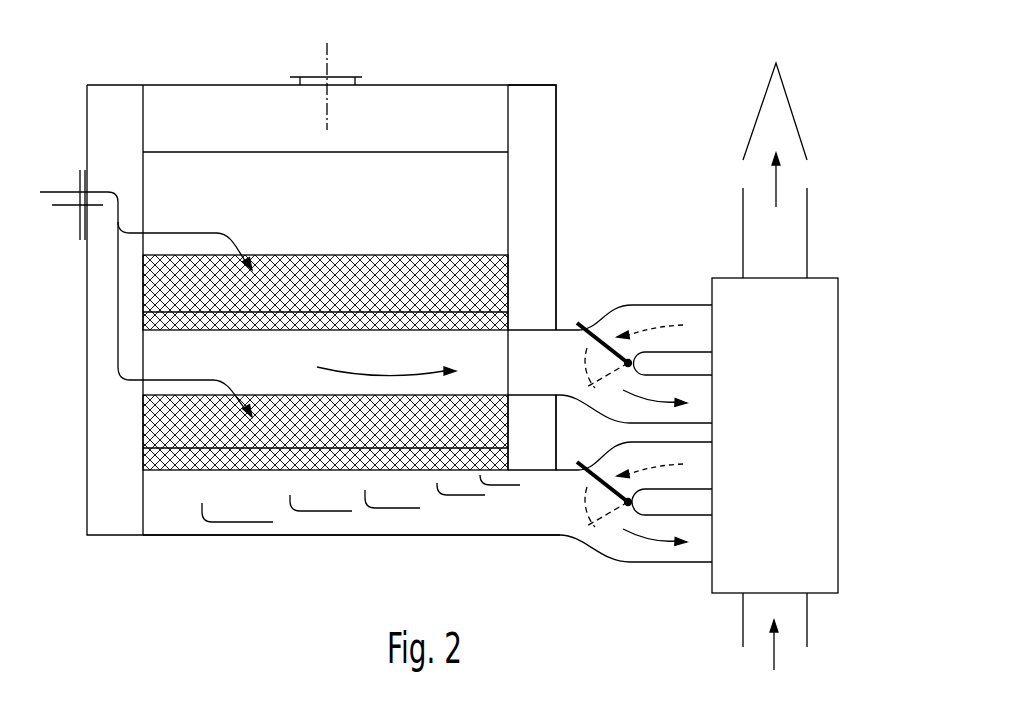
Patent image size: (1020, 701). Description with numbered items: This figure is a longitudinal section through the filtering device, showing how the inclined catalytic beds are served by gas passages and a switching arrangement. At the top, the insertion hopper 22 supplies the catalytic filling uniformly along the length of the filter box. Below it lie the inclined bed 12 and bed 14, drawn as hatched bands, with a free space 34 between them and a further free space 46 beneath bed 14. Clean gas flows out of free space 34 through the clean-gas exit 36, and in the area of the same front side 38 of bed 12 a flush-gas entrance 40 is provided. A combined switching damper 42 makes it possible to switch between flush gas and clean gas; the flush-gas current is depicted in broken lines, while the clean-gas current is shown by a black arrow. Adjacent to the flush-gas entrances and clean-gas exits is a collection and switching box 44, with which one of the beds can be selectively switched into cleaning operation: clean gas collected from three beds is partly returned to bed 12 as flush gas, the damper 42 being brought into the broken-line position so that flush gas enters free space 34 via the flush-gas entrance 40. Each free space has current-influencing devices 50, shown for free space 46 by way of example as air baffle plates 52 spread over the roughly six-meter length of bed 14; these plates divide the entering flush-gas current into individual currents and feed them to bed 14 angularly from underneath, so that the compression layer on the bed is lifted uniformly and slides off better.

The bed 12 is at (483, 308).
The bed 14 is at (157, 462).
The insertion hopper 22 is at (233, 113).
The free space 34 is at (290, 383).
The clean-gas exit 36 is at (565, 360).
The front side 38 is at (573, 197).
The flush-gas entrance 40 is at (658, 318).
The combined switching damper 42 is at (603, 340).
The collection and switching box 44 is at (823, 441).
The free space 46 is at (543, 524).
The current-influencing devices 50 is at (356, 558).
The air baffle plates 52 is at (245, 522).